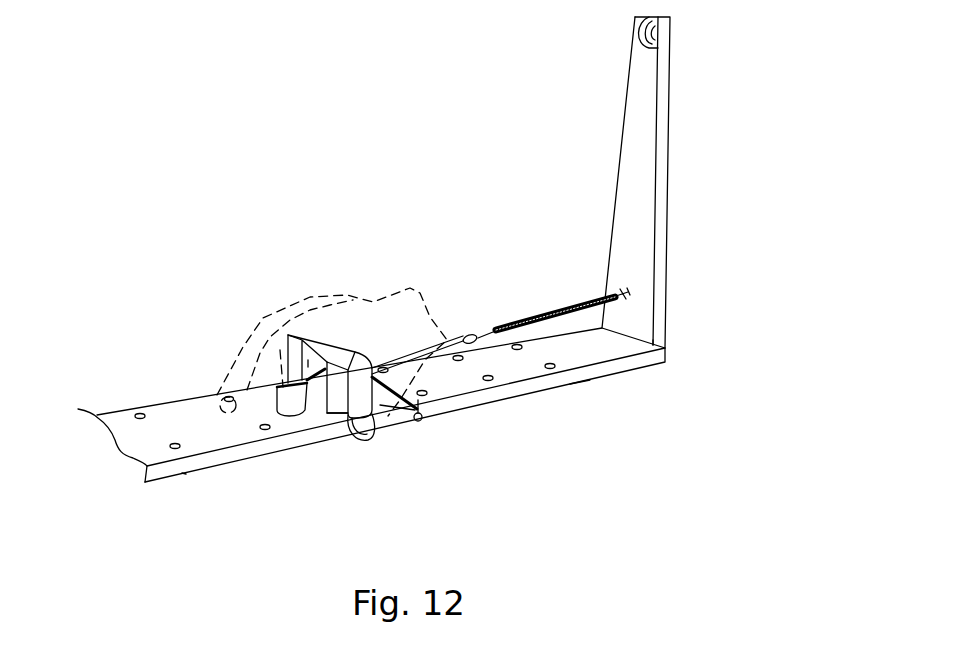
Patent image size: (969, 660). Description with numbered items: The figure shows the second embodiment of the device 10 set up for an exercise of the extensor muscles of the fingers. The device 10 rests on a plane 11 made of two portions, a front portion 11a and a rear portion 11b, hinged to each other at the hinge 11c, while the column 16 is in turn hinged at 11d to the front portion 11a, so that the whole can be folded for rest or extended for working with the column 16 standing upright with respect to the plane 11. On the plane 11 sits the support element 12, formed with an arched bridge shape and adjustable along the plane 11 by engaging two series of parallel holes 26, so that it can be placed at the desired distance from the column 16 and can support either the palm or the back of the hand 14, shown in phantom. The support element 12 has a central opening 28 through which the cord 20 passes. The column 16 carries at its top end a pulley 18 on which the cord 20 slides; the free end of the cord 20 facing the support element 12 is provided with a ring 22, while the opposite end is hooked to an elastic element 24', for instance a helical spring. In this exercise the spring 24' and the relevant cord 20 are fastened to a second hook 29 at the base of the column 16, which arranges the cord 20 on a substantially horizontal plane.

The device 10 is at (252, 262).
The plane 11 is at (621, 383).
The front portion of the plane 11a is at (580, 382).
The portion of the plane 11b is at (182, 473).
The hinge 11c is at (425, 418).
The hinge 11d is at (658, 344).
The support element 12 is at (345, 418).
The hand 14 is at (377, 332).
The column 16 is at (642, 145).
The pulley 18 is at (643, 52).
The cord 20 is at (432, 352).
The ring 22 is at (282, 400).
The elastic element 24' is at (538, 254).
The parallel holes 26 is at (141, 413).
The central opening 28 is at (312, 400).
The second hook 29 is at (620, 282).